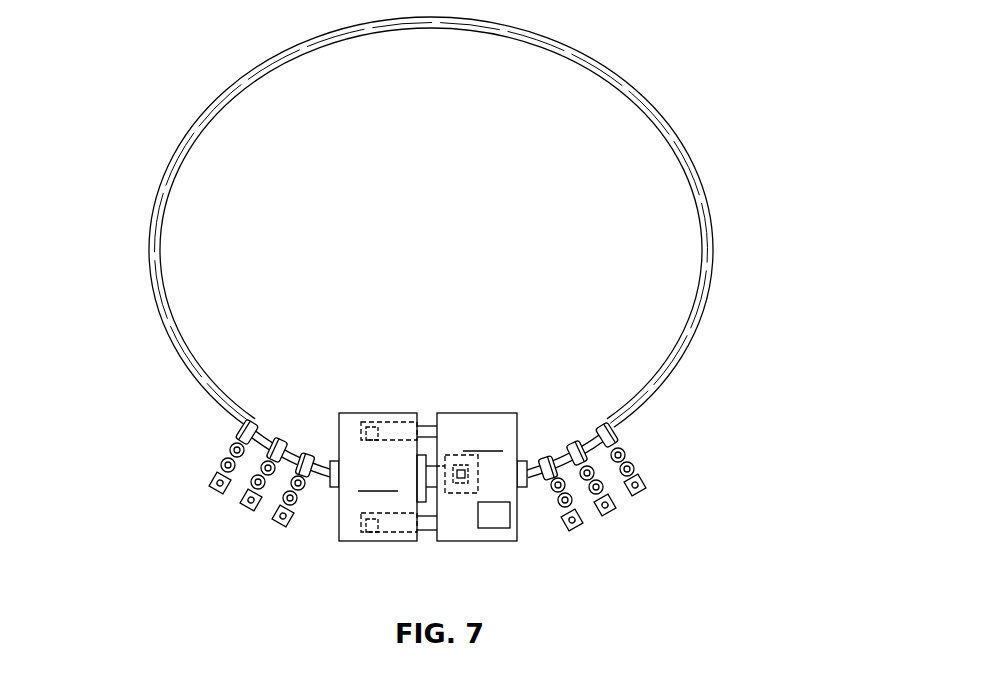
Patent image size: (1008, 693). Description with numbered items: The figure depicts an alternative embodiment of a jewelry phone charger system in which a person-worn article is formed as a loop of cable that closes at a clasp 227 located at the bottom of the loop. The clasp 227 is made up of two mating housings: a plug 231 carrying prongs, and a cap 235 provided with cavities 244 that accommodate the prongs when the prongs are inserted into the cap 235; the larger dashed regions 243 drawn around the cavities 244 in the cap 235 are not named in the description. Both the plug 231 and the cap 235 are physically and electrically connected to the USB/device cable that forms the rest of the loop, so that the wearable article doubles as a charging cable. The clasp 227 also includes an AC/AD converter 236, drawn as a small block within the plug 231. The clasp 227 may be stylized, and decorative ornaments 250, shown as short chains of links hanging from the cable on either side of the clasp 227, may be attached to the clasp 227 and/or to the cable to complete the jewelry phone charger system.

The clasp 227 is at (458, 470).
The cap 235 is at (369, 447).
The plug 231 is at (515, 501).
The battery 243 is at (400, 421).
The cavities 244 is at (370, 421).
The AC/AD converter 236 is at (515, 527).
The decorative ornaments 250 is at (228, 452).